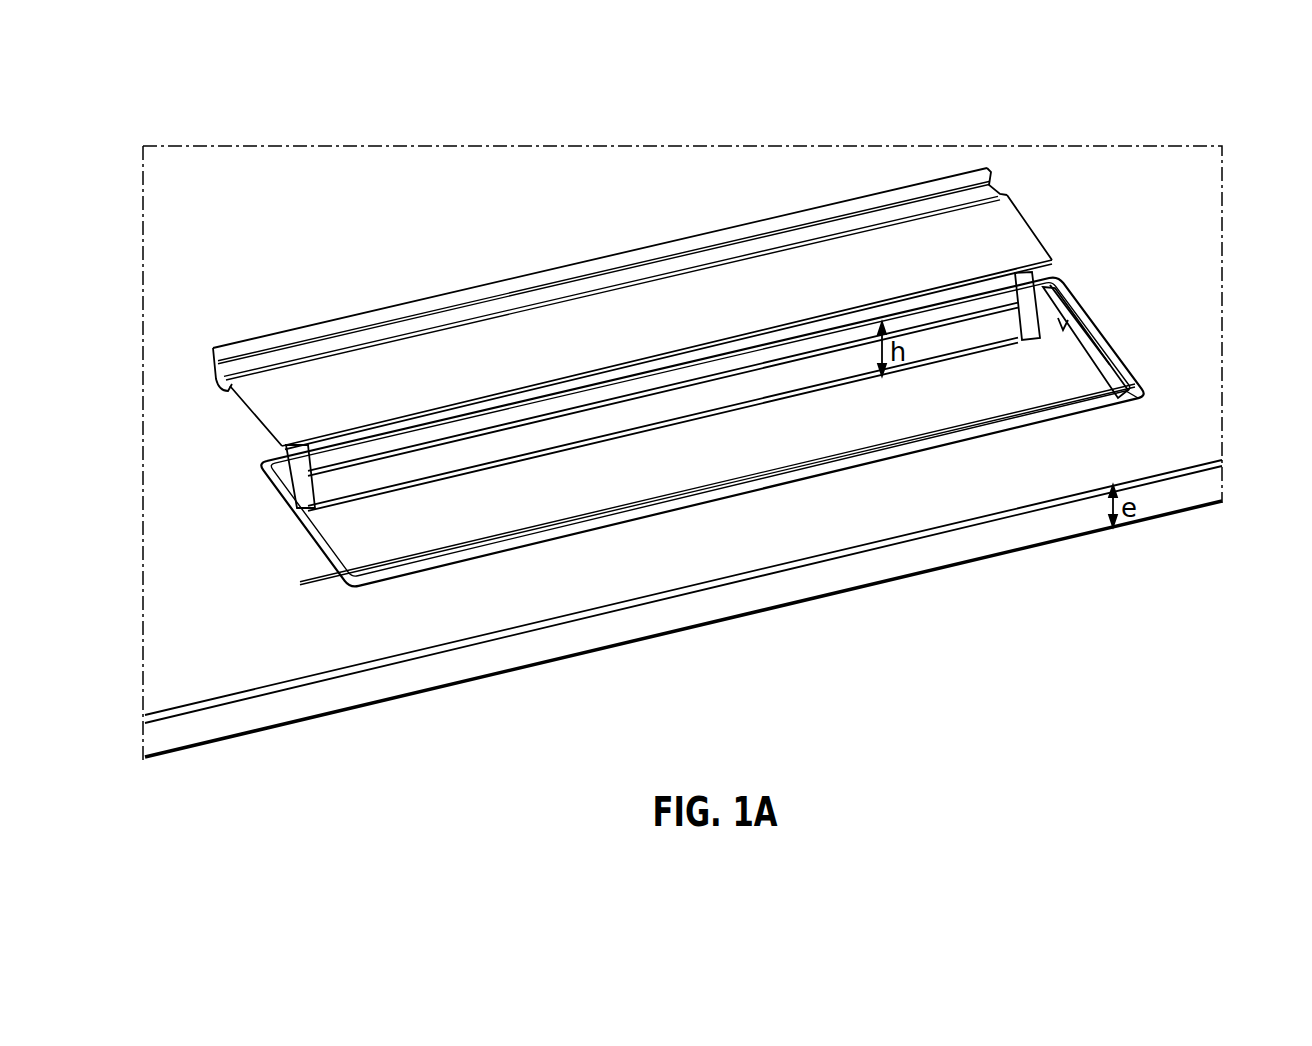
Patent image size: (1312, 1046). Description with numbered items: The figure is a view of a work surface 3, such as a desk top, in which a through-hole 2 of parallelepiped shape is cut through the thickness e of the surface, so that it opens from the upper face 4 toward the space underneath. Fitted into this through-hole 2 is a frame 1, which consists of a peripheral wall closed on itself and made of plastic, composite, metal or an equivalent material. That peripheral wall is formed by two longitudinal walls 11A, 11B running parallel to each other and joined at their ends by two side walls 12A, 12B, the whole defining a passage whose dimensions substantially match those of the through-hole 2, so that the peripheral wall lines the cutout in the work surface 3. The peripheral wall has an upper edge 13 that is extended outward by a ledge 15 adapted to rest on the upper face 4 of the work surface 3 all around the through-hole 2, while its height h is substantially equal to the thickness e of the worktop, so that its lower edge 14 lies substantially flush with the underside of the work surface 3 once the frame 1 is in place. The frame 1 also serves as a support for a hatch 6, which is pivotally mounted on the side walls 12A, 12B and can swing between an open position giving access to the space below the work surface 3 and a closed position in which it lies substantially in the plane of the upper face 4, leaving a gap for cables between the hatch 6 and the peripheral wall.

The frame 1 is at (1117, 356).
The through-hole 2 is at (622, 491).
The work surface 3 is at (1083, 180).
The upper face 4 is at (190, 623).
The hatch 6 is at (629, 335).
The longitudinal wall 11A is at (722, 492).
The longitudinal wall 11B is at (774, 387).
The side wall 12A is at (337, 543).
The side wall 12B is at (1070, 355).
The upper edge 13 is at (617, 515).
The lower edge 14 is at (1082, 385).
The ledge 15 is at (1148, 392).